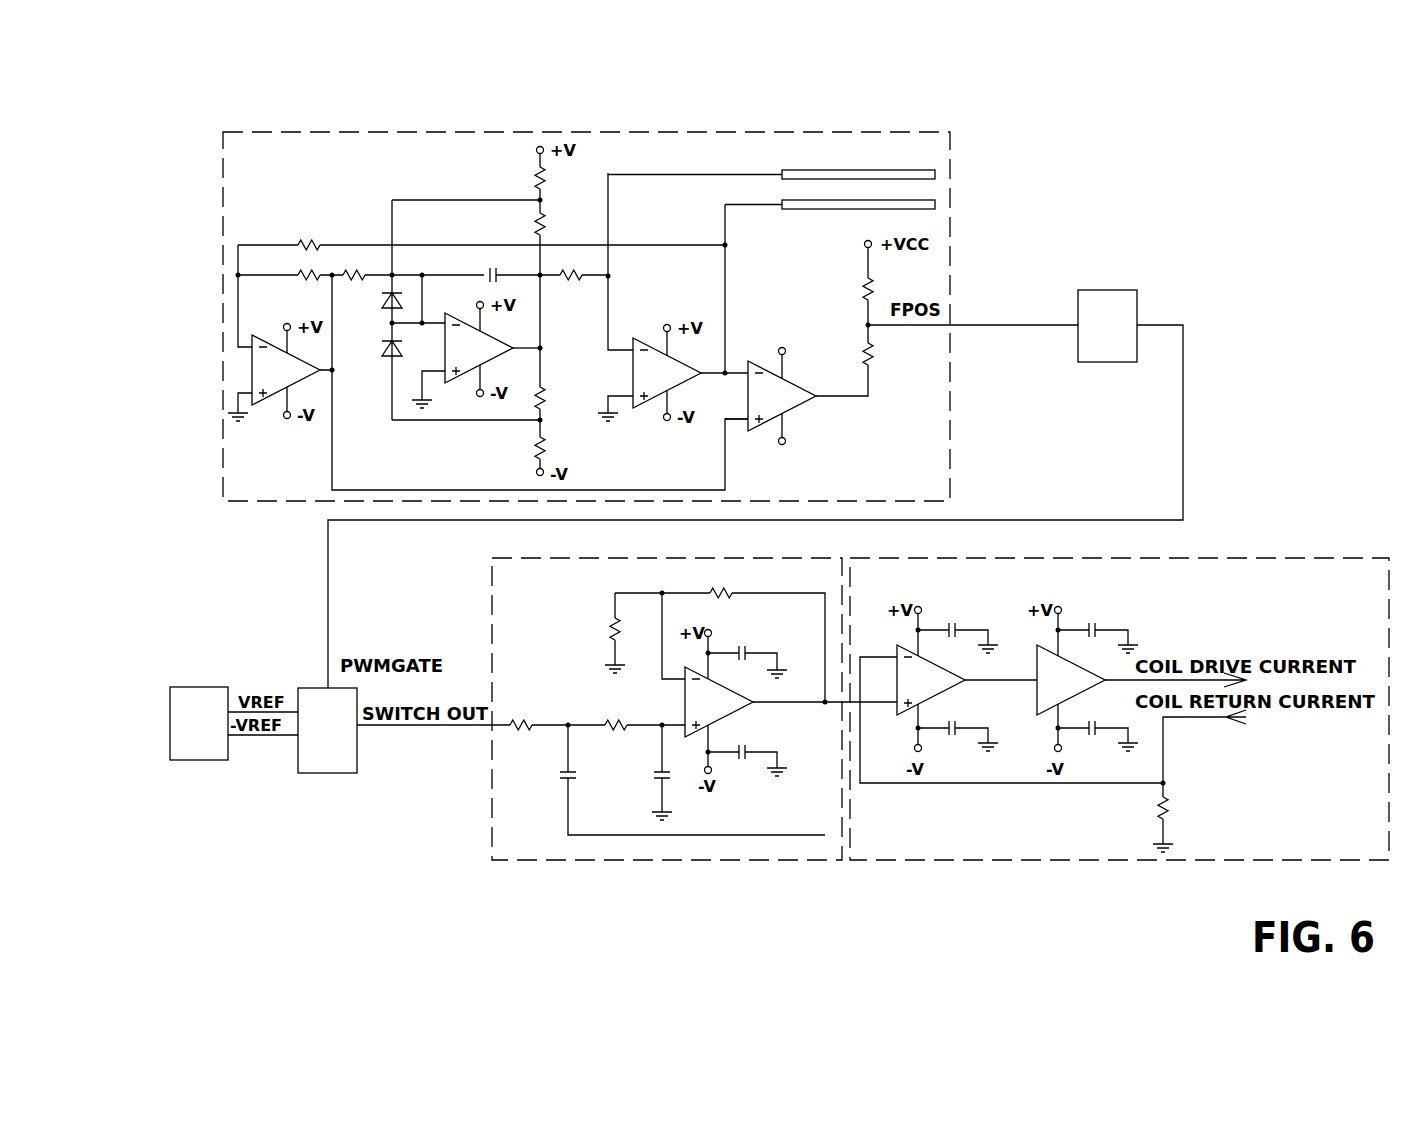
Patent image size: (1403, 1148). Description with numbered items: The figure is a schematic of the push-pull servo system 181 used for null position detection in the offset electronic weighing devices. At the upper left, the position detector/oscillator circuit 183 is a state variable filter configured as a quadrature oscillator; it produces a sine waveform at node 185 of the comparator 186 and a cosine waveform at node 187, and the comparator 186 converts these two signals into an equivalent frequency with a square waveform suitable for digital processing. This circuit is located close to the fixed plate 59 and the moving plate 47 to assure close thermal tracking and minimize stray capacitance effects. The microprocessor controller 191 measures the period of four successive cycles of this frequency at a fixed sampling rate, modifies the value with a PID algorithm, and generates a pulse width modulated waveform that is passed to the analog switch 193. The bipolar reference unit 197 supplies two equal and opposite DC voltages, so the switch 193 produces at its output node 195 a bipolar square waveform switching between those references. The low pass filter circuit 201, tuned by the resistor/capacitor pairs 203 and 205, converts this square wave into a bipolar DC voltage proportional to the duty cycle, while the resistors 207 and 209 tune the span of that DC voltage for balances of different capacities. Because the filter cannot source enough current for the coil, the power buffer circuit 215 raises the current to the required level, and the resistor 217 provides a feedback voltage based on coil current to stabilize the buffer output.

The position detector/oscillator circuit 183 is at (290, 155).
The moving plate 47 is at (873, 177).
The fixed plate 59 is at (870, 205).
The push-pull servo system 181 is at (1085, 245).
The microprocessor controller 191 is at (1102, 320).
The node 187 is at (725, 373).
The comparator 186 is at (798, 397).
The node 185 is at (738, 421).
The bipolar reference unit 197 is at (198, 713).
The analog switch 193 is at (323, 750).
The output node 195 is at (357, 725).
The low pass filter circuit 201 is at (575, 585).
The resistor 207 is at (612, 638).
The resistor 209 is at (721, 593).
The resistor/capacitor pair 203 is at (550, 742).
The resistor/capacitor pair 205 is at (645, 742).
The power buffer circuit 215 is at (1255, 578).
The resistor 217 is at (1165, 808).